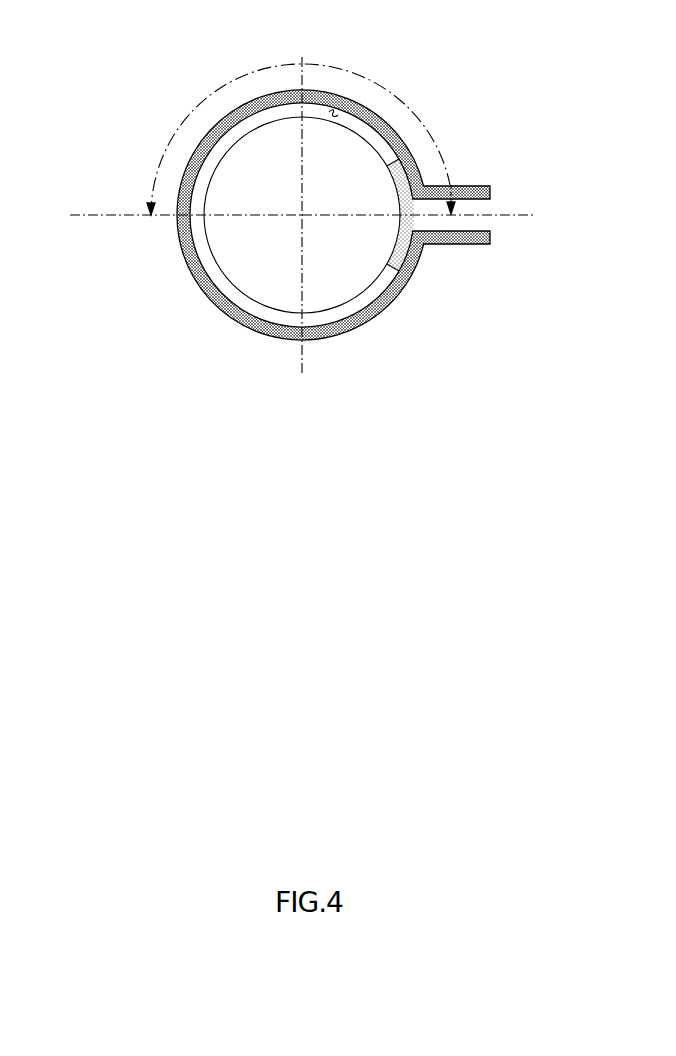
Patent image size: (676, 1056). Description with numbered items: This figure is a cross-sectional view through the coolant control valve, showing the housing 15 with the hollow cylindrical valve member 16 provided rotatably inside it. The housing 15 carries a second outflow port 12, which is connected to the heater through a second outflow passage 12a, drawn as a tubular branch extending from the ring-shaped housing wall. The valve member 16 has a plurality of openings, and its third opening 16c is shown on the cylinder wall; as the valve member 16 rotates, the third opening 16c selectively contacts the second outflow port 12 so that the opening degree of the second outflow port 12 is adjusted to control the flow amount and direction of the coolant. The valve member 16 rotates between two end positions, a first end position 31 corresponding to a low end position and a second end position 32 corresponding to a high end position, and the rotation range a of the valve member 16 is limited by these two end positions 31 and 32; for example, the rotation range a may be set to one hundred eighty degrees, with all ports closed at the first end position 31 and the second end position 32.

The second outflow port 12 is at (430, 226).
The second outflow passage 12a is at (465, 186).
The housing 15 is at (258, 98).
The valve member 16 is at (390, 163).
The third opening 16c is at (336, 107).
The first end position 31 is at (517, 214).
The second end position 32 is at (88, 214).
The rotation range a is at (301, 125).